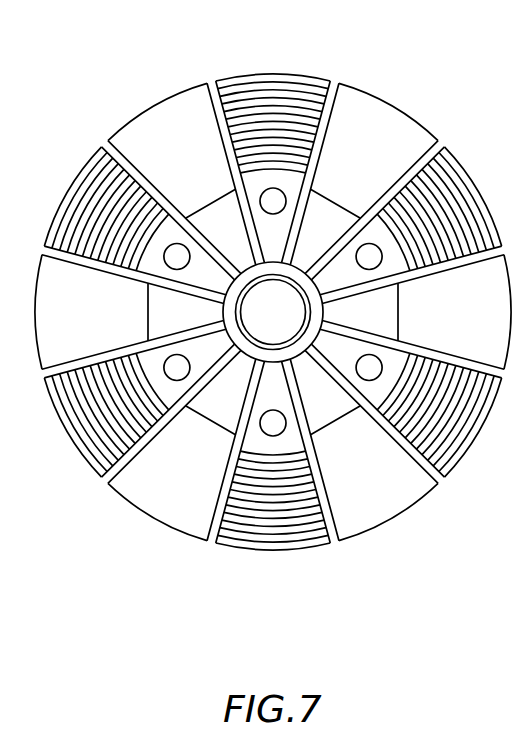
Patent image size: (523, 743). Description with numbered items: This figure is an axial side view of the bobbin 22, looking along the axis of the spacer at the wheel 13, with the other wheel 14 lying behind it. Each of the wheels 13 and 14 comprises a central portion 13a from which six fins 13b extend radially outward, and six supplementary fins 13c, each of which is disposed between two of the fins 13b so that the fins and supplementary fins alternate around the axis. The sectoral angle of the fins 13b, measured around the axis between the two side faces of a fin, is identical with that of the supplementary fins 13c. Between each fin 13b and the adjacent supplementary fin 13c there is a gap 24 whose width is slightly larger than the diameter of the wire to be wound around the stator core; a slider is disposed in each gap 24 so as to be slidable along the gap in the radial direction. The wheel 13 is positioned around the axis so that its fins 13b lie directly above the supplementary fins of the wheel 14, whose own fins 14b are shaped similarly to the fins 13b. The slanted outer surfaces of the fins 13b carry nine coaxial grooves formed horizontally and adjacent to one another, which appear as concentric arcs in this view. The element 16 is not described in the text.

The wheel 13 is at (279, 556).
The central portion 13a is at (318, 318).
The fin 13b is at (274, 74).
The supplementary fin 13c is at (328, 208).
The wheel 14 is at (151, 523).
The fin 14b is at (176, 100).
The mounting hole 16 is at (379, 249).
The bobbin 22 is at (445, 100).
The gap 24 is at (443, 478).